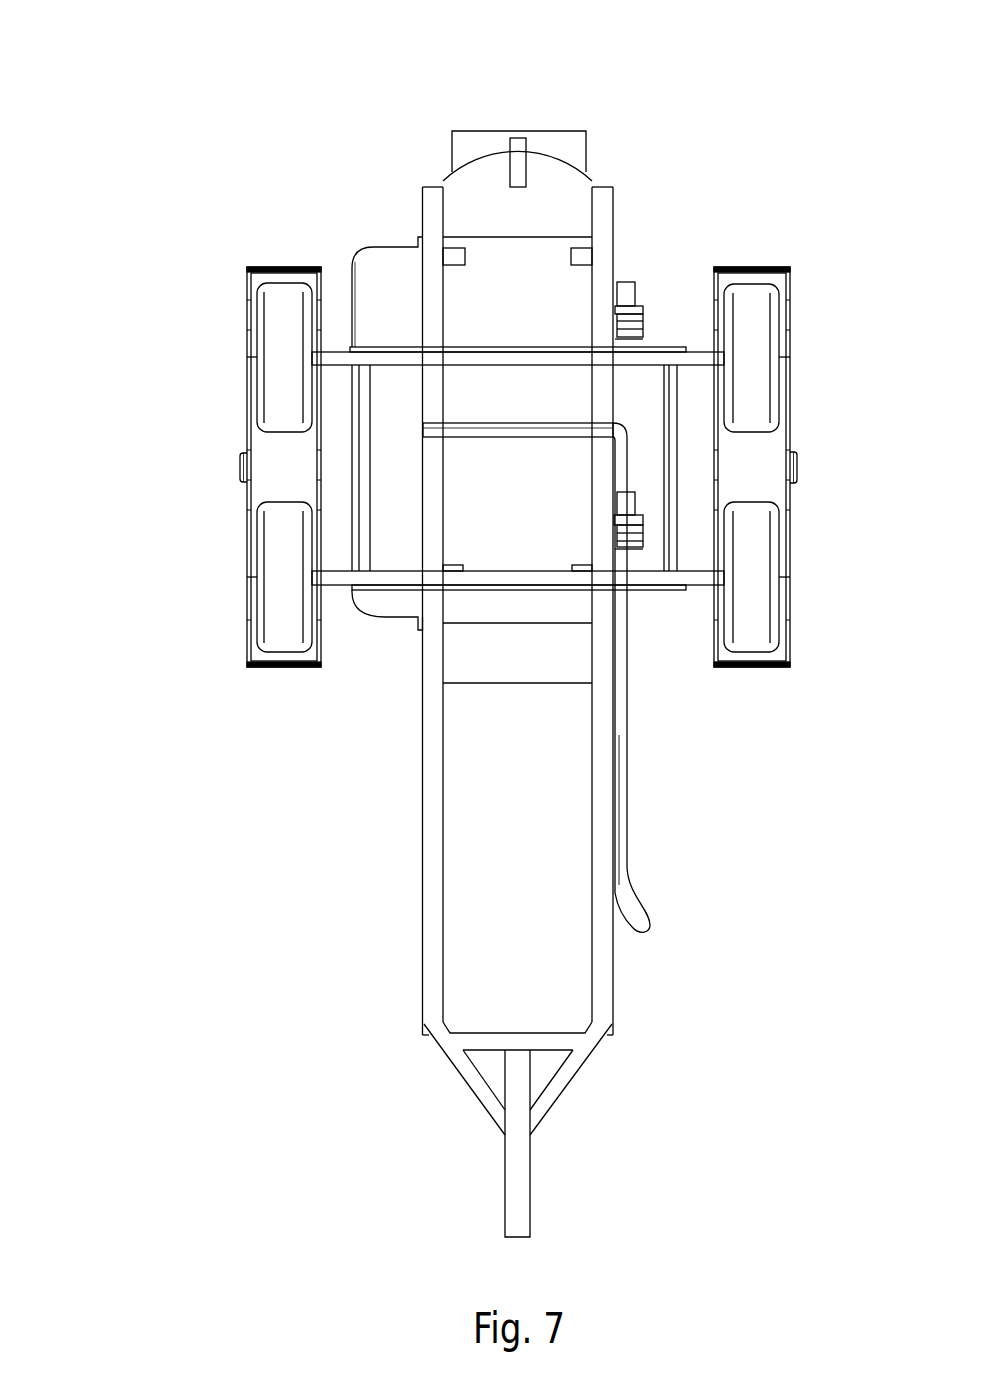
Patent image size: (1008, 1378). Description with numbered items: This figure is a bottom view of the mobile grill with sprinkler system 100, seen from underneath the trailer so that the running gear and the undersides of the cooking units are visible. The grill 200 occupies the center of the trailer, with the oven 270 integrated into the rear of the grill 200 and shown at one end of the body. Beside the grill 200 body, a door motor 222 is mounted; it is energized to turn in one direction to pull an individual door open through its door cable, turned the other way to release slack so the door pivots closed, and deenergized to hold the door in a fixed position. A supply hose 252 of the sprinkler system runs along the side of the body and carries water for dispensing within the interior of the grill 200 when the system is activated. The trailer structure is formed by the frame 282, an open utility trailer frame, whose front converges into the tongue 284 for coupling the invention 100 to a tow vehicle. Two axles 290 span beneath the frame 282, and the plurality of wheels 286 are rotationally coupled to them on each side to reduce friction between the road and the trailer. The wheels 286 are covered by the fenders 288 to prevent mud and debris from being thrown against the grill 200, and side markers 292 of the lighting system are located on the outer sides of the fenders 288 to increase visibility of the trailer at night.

The mobile grill with sprinkler system 100 is at (118, 171).
The grill 200 is at (461, 196).
The door motor 222 is at (635, 287).
The supply hose 252 is at (627, 830).
The oven 270 is at (587, 142).
The frame 282 is at (427, 885).
The tongue 284 is at (522, 1222).
The wheels 286 is at (278, 389).
The fenders 288 is at (262, 668).
The axles 290 is at (705, 353).
The side markers 292 is at (797, 468).